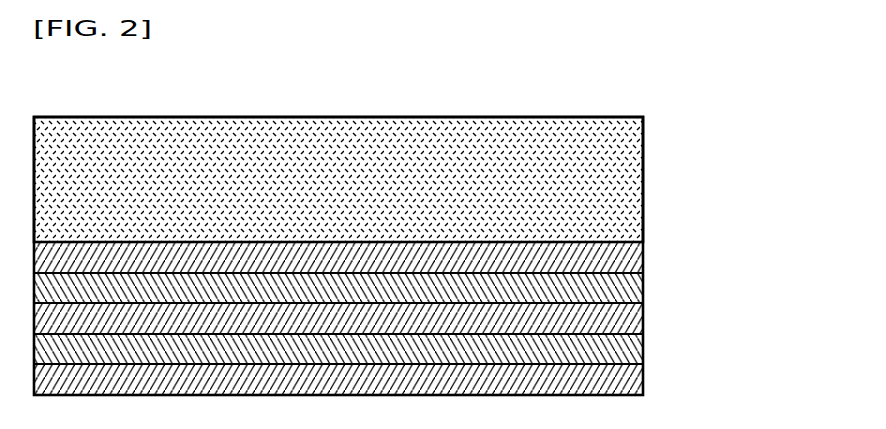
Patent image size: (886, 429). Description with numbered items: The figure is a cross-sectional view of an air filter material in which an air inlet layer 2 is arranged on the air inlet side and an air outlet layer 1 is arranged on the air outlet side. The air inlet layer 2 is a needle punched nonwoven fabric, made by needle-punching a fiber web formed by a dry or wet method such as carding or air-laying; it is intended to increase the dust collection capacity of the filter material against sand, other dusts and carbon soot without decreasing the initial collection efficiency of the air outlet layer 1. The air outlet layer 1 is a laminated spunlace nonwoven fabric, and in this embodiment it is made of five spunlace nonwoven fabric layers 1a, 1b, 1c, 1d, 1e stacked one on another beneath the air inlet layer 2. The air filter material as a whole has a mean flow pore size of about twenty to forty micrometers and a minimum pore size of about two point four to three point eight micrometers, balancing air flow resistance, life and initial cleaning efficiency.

The air inlet layer 2 is at (632, 181).
The air outlet layer 1 is at (431, 262).
The spunlace nonwoven fabric layer 1a is at (643, 255).
The spunlace nonwoven fabric layer 1b is at (643, 287).
The spunlace nonwoven fabric layer 1c is at (643, 318).
The spunlace nonwoven fabric layer 1d is at (643, 345).
The spunlace nonwoven fabric layer 1e is at (404, 385).